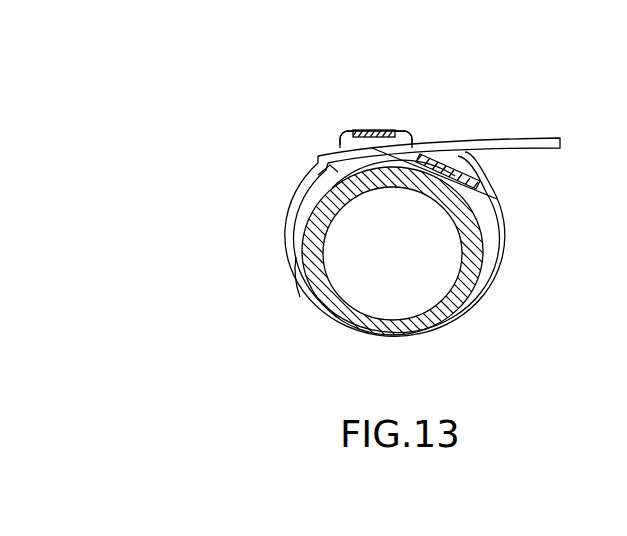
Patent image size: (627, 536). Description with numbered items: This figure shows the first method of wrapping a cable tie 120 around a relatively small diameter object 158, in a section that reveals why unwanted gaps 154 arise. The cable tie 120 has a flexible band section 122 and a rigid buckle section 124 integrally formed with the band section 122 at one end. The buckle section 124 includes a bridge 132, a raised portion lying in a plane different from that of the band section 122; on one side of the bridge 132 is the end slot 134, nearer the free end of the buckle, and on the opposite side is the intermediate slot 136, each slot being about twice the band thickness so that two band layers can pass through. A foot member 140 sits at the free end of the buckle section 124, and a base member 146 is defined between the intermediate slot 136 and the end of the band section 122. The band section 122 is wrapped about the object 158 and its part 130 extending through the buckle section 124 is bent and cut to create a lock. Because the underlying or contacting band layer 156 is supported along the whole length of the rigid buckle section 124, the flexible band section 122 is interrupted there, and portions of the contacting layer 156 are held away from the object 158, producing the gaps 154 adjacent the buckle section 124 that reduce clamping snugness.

The cable tie 120 is at (522, 274).
The band section 122 is at (470, 329).
The buckle section 124 is at (440, 124).
The part of the band section extending through the buckle section 130 is at (522, 140).
The bridge 132 is at (358, 128).
The end slot 134 is at (341, 141).
The intermediate slot 136 is at (409, 128).
The foot member 140 is at (330, 190).
The base member 146 is at (495, 142).
The gaps 154 is at (470, 195).
The contacting band layer 156 is at (300, 300).
The object 158 is at (365, 328).